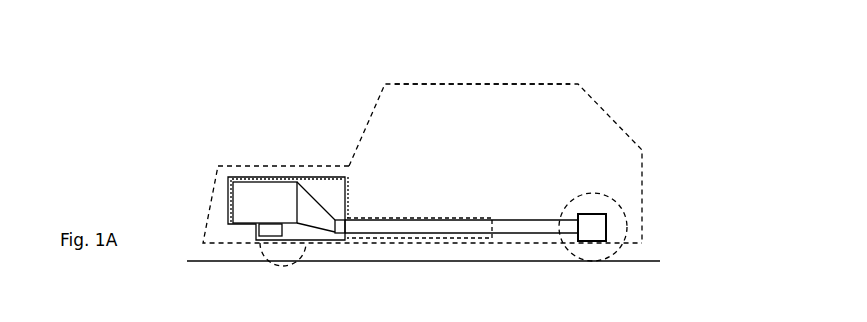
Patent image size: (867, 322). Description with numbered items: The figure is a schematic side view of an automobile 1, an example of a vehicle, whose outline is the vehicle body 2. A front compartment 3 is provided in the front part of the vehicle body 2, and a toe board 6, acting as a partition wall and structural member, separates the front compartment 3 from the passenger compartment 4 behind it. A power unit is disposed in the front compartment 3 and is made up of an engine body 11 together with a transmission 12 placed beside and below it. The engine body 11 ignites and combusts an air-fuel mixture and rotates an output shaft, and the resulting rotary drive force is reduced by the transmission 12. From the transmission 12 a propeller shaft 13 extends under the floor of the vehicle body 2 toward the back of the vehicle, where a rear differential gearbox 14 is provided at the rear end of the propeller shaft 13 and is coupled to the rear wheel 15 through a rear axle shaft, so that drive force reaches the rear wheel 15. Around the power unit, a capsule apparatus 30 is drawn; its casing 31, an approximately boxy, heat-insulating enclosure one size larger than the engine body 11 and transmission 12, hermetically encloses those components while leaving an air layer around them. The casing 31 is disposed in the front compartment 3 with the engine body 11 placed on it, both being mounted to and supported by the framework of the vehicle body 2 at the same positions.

The automobile 1 is at (266, 73).
The vehicle body 2 is at (363, 130).
The front compartment 3 is at (296, 177).
The passenger compartment 4 is at (492, 100).
The toe board 6 is at (348, 175).
The engine body 11 is at (258, 192).
The transmission 12 is at (325, 220).
The propeller shaft 13 is at (517, 225).
The rear differential gearbox 14 is at (597, 232).
The rear wheel 15 is at (568, 250).
The capsule apparatus 30 is at (237, 170).
The casing 31 is at (323, 177).